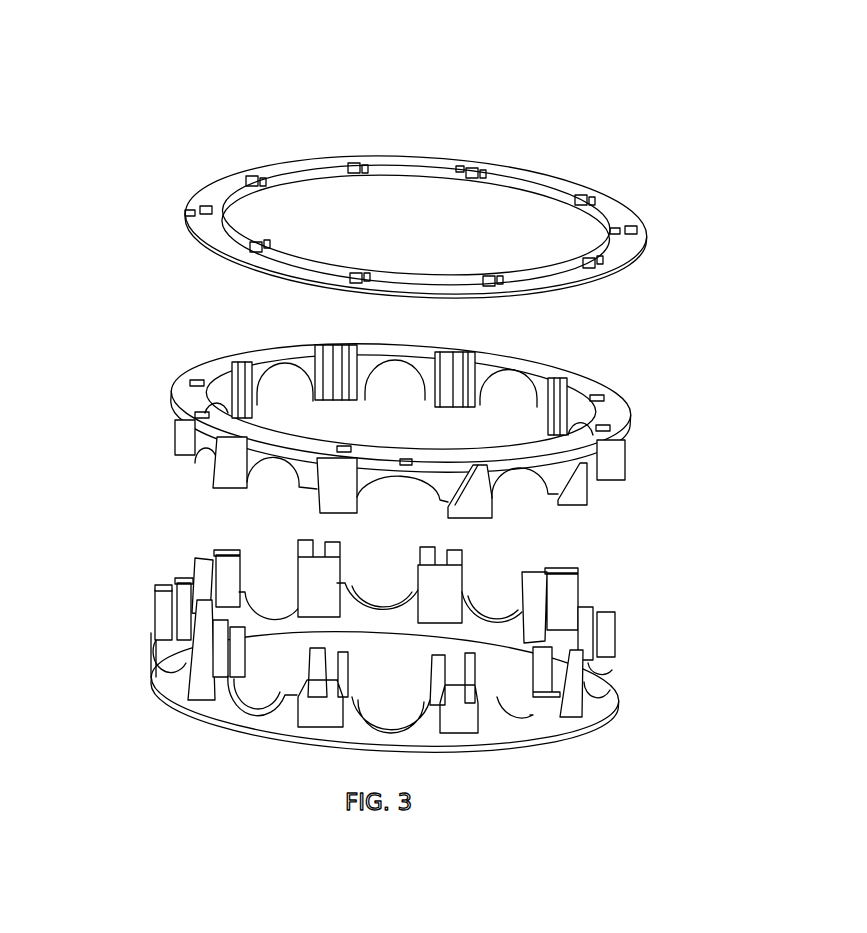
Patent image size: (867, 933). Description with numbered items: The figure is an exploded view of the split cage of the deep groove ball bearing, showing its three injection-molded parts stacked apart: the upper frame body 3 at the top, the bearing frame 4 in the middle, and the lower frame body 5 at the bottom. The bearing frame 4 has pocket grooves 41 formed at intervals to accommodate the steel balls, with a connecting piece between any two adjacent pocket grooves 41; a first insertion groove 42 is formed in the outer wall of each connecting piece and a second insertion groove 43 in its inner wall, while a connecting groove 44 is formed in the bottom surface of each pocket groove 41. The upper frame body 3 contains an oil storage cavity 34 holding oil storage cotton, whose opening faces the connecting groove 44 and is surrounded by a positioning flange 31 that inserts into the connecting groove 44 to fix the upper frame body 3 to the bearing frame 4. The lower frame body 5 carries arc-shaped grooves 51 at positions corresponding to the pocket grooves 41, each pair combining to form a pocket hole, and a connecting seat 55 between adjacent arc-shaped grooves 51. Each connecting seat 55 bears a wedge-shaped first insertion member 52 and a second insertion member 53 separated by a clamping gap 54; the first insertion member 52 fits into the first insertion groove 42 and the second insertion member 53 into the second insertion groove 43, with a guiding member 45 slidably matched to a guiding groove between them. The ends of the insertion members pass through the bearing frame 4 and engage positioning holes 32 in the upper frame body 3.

The upper frame body 3 is at (426, 161).
The positioning flange 31 is at (532, 195).
The positioning hole 32 is at (492, 172).
The oil storage cavity 34 is at (407, 173).
The bearing frame 4 is at (451, 370).
The pocket groove 41 is at (560, 485).
The first insertion groove 42 is at (628, 442).
The second insertion groove 43 is at (563, 373).
The connecting groove 44 is at (527, 363).
The guiding member 45 is at (487, 353).
The lower frame body 5 is at (383, 596).
The arc-shaped groove 51 is at (487, 623).
The first insertion member 52 is at (157, 612).
The second insertion member 53 is at (172, 588).
The clamping gap 54 is at (530, 662).
The connecting seat 55 is at (487, 737).